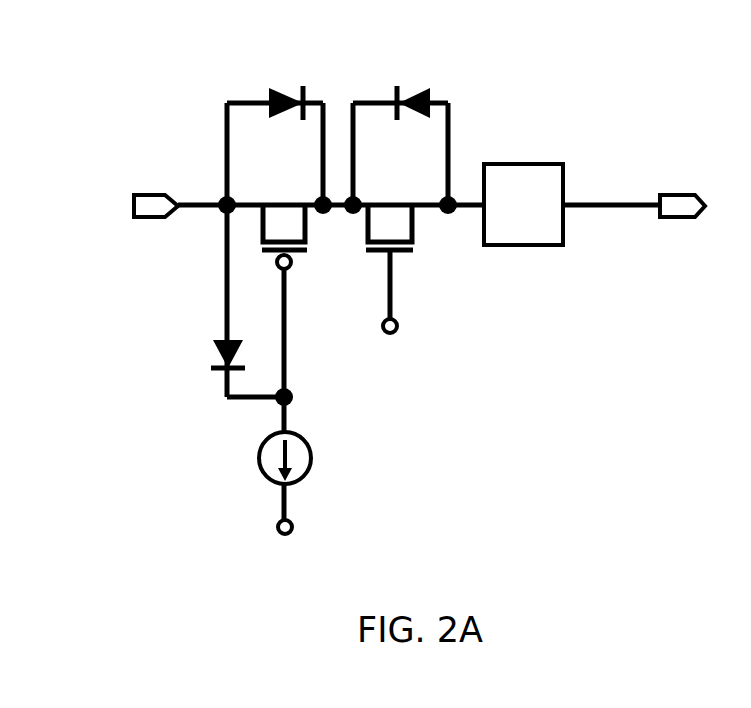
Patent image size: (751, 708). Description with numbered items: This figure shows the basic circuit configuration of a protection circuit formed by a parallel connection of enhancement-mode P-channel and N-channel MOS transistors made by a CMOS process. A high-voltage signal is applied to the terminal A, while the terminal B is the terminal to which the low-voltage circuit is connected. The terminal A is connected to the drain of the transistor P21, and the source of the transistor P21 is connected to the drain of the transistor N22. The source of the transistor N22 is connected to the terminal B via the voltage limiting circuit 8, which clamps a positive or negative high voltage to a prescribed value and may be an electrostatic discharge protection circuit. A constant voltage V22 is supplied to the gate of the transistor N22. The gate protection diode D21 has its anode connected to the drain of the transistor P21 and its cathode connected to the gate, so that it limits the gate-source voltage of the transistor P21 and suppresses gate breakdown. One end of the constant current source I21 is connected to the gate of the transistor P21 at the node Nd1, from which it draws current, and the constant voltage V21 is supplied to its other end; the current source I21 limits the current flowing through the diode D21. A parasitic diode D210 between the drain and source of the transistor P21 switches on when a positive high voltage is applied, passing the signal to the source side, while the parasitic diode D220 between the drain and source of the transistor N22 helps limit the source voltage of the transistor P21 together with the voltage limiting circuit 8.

The terminal A is at (152, 195).
The terminal B is at (683, 195).
The parasitic diode D210 is at (283, 88).
The parasitic diode D220 is at (413, 88).
The enhancement-type P-channel MOS transistor P21 is at (277, 212).
The enhancement-type N-channel MOS transistor N22 is at (390, 205).
The constant voltage V22 is at (398, 322).
The voltage limiting circuit 8 is at (523, 204).
The gate protection diode D21 is at (215, 358).
The source Nd1 is at (278, 405).
The constant current source I21 is at (258, 462).
The constant voltage V21 is at (276, 528).